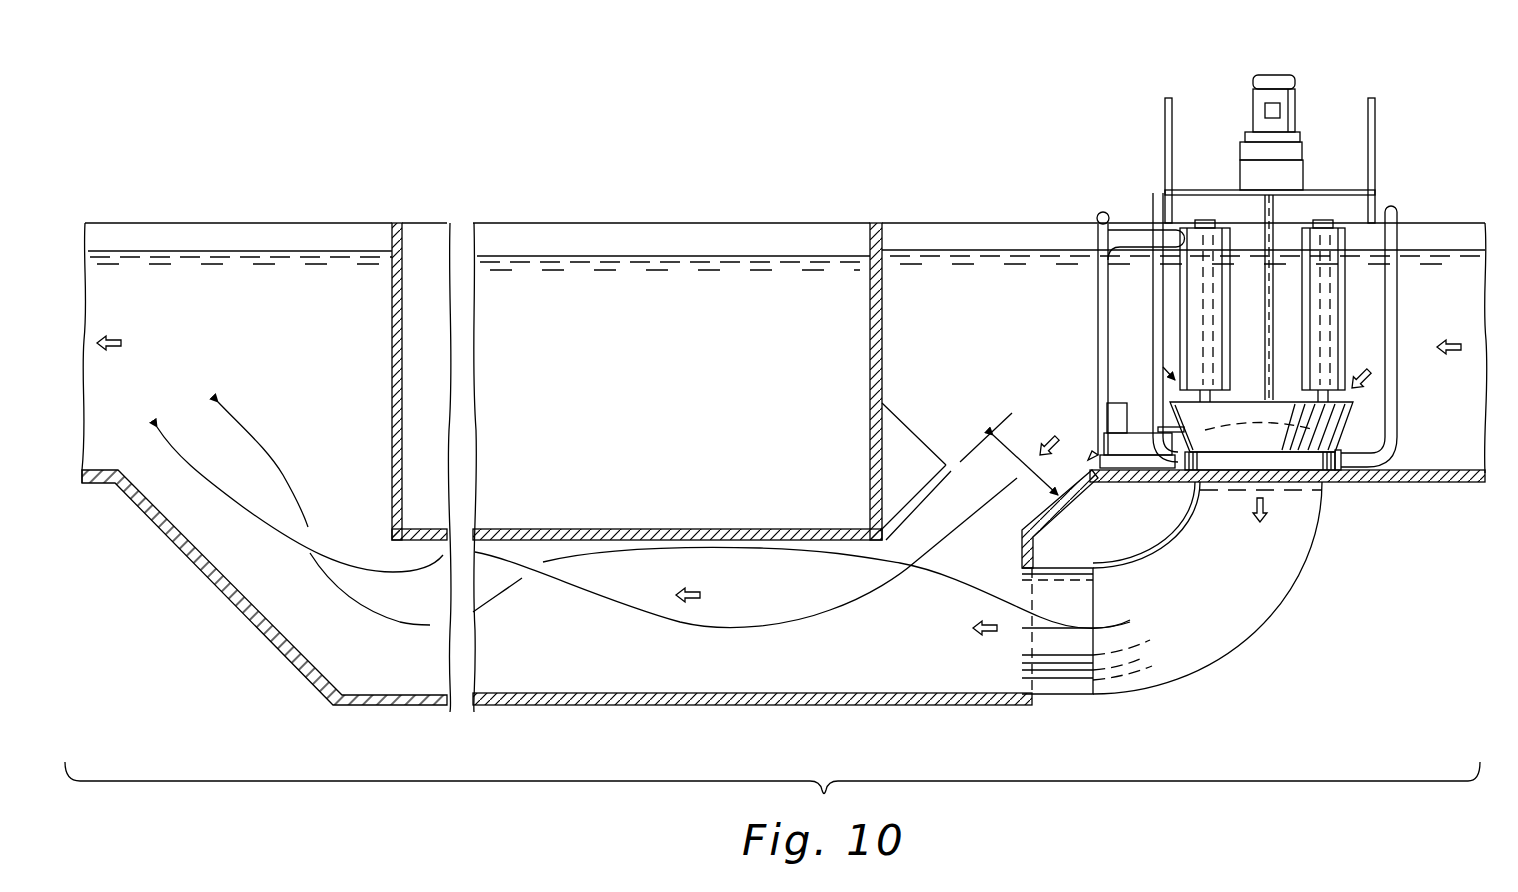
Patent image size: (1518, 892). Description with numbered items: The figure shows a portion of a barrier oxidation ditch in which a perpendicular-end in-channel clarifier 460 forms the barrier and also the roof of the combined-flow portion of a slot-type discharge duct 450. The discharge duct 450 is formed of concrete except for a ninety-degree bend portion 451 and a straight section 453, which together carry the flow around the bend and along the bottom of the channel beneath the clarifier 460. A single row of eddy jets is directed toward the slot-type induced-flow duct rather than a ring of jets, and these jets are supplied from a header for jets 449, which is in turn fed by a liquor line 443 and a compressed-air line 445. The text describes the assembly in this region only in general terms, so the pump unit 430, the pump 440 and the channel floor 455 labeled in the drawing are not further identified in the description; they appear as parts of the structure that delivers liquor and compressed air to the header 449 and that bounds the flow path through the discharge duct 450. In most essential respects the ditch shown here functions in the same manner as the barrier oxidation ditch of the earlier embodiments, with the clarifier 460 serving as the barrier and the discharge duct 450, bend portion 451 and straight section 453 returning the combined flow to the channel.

The pump and filter unit 430 is at (1215, 97).
The in-channel clarifier 460 is at (777, 220).
The compressed-air line 445 is at (1105, 212).
The liquor line 443 is at (1097, 322).
The pump 440 is at (1110, 397).
The header for jets 449 is at (1097, 480).
The 90° bend portion 451 is at (1228, 633).
The straight section 453 is at (1073, 690).
The channel floor 455 is at (678, 705).
The slot-type discharge duct 450 is at (855, 710).